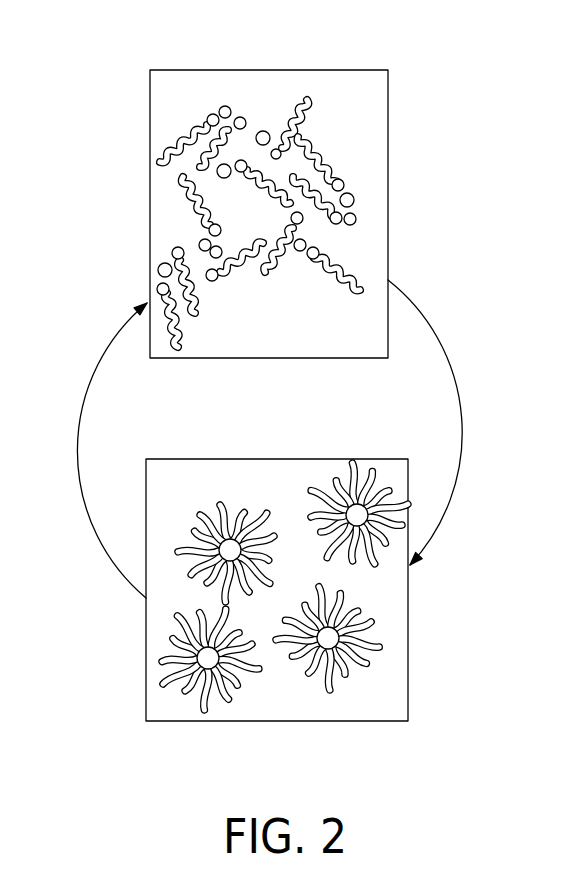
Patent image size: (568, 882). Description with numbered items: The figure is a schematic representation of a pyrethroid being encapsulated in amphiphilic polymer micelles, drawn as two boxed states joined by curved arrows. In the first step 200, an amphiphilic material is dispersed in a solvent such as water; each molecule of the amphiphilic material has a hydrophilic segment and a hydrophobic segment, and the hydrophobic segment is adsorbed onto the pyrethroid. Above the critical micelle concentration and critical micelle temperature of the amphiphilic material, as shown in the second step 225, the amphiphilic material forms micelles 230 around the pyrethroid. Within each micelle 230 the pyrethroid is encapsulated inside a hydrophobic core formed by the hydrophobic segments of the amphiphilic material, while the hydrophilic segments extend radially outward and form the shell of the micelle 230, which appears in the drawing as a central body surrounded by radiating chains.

The first step 200 is at (152, 222).
The second step 225 is at (152, 664).
The micelle 230 is at (365, 462).